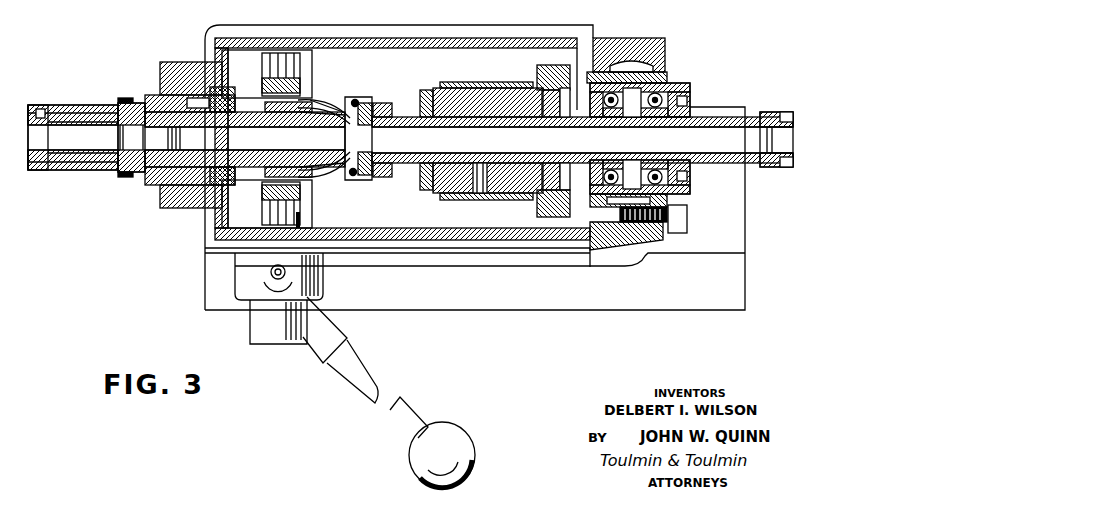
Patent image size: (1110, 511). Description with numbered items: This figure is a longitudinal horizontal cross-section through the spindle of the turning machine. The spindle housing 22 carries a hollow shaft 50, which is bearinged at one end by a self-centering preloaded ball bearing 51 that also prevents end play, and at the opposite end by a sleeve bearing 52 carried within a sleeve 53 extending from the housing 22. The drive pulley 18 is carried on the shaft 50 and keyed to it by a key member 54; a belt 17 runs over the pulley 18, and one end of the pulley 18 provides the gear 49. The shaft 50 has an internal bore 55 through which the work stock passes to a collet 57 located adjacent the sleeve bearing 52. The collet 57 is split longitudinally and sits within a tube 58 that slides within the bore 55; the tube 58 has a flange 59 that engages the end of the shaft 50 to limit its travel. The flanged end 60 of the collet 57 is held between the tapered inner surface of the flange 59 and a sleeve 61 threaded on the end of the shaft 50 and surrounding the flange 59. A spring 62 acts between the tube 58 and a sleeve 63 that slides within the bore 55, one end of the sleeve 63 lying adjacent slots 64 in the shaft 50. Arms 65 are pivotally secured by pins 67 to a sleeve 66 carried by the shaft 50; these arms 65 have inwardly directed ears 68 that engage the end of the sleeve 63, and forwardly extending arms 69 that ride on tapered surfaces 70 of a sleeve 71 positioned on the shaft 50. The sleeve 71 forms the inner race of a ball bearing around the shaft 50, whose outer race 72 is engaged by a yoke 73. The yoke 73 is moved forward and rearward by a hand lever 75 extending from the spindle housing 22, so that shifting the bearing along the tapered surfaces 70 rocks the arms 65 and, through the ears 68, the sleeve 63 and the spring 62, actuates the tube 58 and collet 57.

The belt 17 is at (480, 82).
The drive pulley 18 is at (432, 88).
The spindle housing 22 is at (603, 38).
The gear 49 is at (545, 66).
The hollow shaft 50 is at (440, 153).
The self-centering preloaded ball bearing 51 is at (672, 78).
The sleeve bearing 52 is at (162, 190).
The sleeve 53 is at (196, 63).
The key member 54 is at (500, 153).
The internal bore 55 is at (603, 152).
The collet 57 is at (38, 136).
The tube 58 is at (78, 170).
The flange 59 is at (46, 106).
The flanged end 60 is at (48, 168).
The sleeve 61 is at (28, 104).
The spring 62 is at (175, 180).
The sleeve 63 is at (222, 127).
The slots 64 is at (320, 139).
The arms 65 is at (330, 97).
The sleeve 66 is at (416, 198).
The pins 67 is at (355, 102).
The ears 68 is at (358, 138).
The forwardly extending arms 69 is at (310, 184).
The tapered surfaces 70 is at (300, 100).
The sleeve 71 is at (262, 180).
The outer race 72 is at (264, 192).
The yoke 73 is at (302, 223).
The hand lever 75 is at (370, 362).